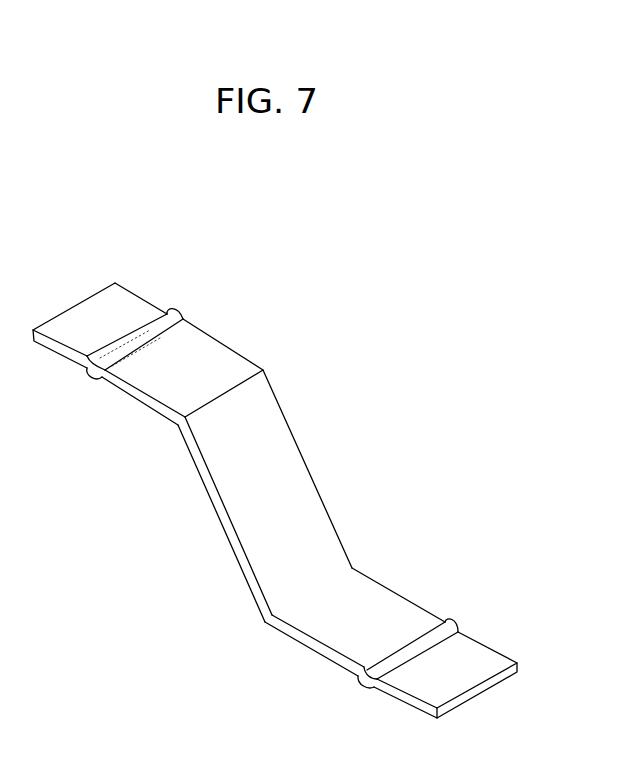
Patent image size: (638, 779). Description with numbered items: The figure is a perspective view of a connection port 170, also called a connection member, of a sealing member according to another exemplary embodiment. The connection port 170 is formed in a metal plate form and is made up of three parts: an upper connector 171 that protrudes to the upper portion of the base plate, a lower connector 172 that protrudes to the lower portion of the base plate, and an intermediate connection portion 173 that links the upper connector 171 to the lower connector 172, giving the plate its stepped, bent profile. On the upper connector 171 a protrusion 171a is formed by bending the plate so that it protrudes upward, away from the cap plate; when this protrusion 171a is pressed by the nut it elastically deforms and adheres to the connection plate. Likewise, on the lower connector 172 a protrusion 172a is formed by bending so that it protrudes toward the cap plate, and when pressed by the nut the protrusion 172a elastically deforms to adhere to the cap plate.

The connection port 170 is at (367, 353).
The upper connector 171 is at (215, 360).
The protrusion 171a is at (167, 311).
The lower connector 172 is at (470, 658).
The protrusion 172a is at (362, 688).
The intermediate connection portion 173 is at (283, 473).